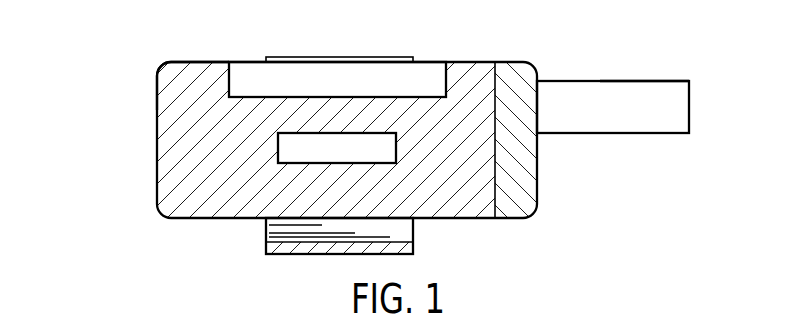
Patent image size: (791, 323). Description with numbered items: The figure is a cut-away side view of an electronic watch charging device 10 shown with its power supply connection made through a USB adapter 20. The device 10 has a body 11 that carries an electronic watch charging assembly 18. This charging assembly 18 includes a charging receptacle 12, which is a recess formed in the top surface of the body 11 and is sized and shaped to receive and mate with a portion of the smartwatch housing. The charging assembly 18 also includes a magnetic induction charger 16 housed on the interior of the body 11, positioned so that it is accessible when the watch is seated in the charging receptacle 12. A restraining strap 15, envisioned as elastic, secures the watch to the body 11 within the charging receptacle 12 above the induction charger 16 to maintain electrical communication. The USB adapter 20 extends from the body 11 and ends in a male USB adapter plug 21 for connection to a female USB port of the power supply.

The device 10 is at (136, 142).
The body 11 is at (477, 62).
The charging receptacle 12 is at (275, 80).
The restraining strap 15 is at (395, 57).
The magnetic induction charger 16 is at (300, 153).
The electronic watch charging assembly 18 is at (187, 103).
The USB adapter 20 is at (535, 68).
The male USB adapter plug 21 is at (660, 81).